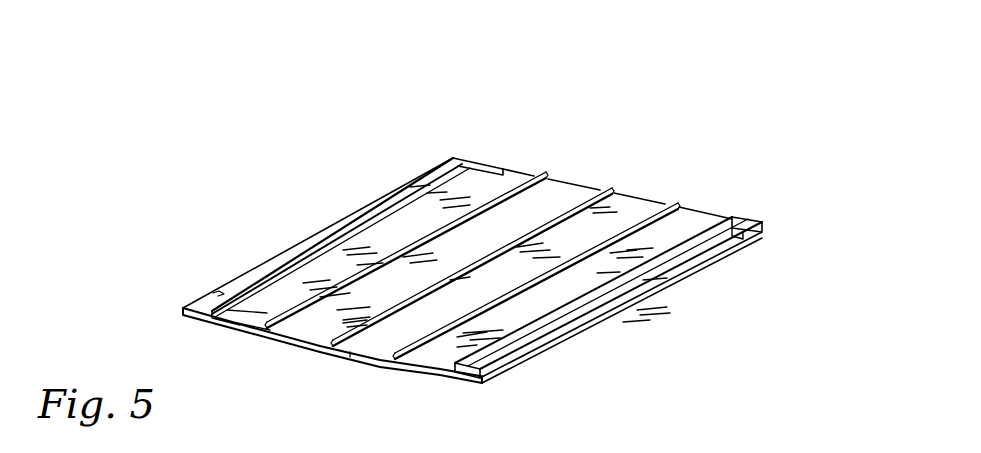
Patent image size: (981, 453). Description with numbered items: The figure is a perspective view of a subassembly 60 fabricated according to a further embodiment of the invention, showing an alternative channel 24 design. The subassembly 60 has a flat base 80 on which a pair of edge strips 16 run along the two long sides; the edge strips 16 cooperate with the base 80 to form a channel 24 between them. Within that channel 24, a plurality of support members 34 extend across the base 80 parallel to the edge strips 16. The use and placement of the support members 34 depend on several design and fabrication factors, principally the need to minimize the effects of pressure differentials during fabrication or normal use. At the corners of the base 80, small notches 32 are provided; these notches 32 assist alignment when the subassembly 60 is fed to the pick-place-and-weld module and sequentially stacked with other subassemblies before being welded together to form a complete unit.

The edge strips 16 is at (456, 160).
The channel 24 is at (350, 357).
The notches 32 is at (222, 294).
The support members 34 is at (546, 173).
The subassembly 60 is at (786, 130).
The base 80 is at (408, 369).